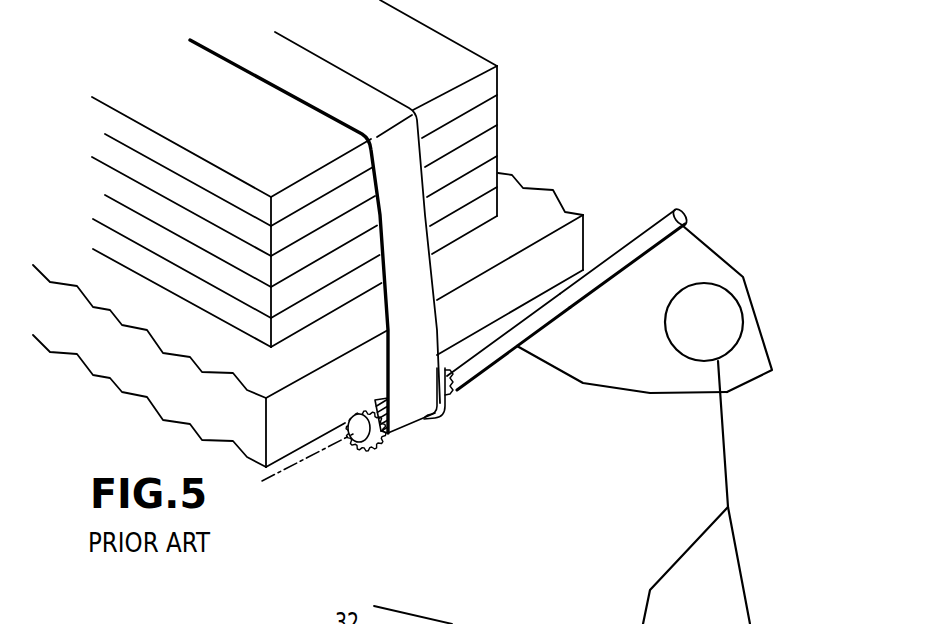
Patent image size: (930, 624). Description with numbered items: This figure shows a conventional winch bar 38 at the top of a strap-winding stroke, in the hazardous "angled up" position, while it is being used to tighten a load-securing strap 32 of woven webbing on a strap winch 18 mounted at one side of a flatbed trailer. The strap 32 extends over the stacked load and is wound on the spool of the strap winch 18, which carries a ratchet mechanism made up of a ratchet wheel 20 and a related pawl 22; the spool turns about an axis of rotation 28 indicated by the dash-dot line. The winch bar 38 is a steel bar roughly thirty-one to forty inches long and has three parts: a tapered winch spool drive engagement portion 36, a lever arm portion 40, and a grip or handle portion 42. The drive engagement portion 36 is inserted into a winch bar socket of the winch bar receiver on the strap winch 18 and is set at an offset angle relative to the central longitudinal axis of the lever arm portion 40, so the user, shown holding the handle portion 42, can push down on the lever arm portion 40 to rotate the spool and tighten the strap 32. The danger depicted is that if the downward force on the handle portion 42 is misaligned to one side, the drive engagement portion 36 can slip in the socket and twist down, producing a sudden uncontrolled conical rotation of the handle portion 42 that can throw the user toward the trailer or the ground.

The strap winch 18 is at (428, 422).
The ratchet wheel 20 is at (368, 455).
The pawl 22 is at (375, 405).
The axis of rotation 28 is at (313, 458).
The strap 32 is at (344, 82).
The winch spool drive engagement portion 36 is at (440, 382).
The winch bar 38 is at (692, 207).
The lever arm portion 40 is at (490, 366).
The handle portion 42 is at (636, 233).